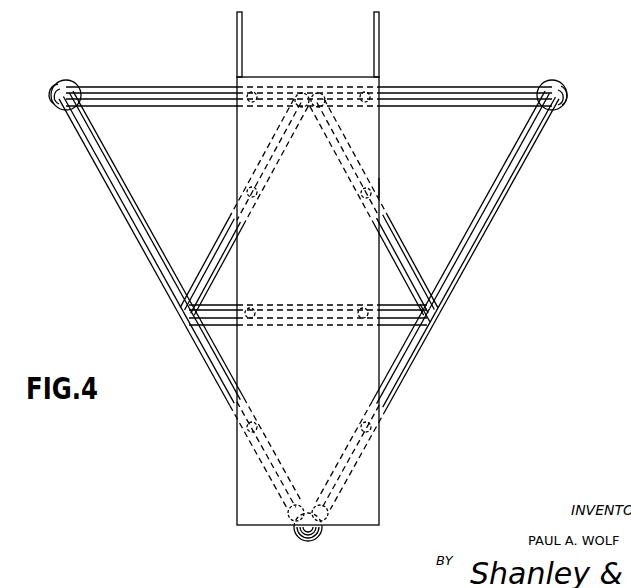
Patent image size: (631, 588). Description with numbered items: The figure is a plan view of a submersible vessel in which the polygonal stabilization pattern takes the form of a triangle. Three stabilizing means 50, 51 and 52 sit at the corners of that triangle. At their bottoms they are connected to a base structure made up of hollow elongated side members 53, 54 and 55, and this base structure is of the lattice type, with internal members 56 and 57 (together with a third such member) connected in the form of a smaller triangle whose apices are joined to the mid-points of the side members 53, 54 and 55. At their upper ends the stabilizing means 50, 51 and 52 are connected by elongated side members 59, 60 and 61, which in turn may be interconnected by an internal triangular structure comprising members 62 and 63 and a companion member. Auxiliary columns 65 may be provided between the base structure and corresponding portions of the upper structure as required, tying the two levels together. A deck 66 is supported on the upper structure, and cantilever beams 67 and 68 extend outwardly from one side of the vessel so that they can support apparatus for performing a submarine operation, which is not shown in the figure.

The stabilizing means 50 is at (67, 80).
The stabilizing means 51 is at (568, 93).
The stabilizing means 52 is at (299, 538).
The hollow elongated side member 53 is at (444, 87).
The hollow elongated side member 54 is at (422, 341).
The hollow elongated side member 55 is at (164, 289).
The internal member 56 is at (206, 256).
The internal member 57 is at (410, 243).
The elongated side member 59 is at (168, 96).
The elongated side member 60 is at (512, 166).
The elongated side member 61 is at (120, 194).
The internal triangular structure member 62 is at (230, 225).
The internal triangular structure member 63 is at (416, 278).
The auxiliary column 65 is at (381, 190).
The deck 66 is at (314, 361).
The cantilever beam 67 is at (242, 36).
The cantilever beam 68 is at (380, 35).